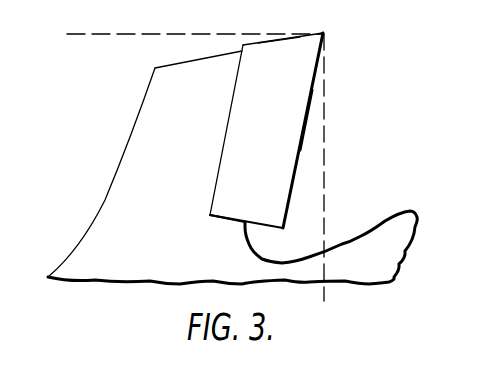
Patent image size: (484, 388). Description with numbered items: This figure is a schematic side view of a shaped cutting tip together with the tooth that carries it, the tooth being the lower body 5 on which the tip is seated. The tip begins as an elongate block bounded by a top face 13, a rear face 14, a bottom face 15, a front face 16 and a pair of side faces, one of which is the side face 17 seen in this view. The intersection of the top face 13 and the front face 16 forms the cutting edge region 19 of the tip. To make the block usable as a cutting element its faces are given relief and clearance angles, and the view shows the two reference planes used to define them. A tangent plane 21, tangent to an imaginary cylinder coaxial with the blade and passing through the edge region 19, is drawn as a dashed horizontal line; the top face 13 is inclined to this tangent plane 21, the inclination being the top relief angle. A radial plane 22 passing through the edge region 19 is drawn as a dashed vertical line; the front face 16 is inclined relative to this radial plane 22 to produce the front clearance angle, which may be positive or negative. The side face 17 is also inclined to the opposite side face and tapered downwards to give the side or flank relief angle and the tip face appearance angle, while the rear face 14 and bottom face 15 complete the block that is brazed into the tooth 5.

The hull 5 is at (342, 243).
The top face 13 is at (273, 40).
The rear face 14 is at (230, 118).
The bottom face 15 is at (226, 222).
The front face 16 is at (305, 130).
The side face 17 is at (274, 137).
The cutting edge region 19 is at (323, 33).
The tangent plane 21 is at (118, 33).
The radial plane 22 is at (325, 193).